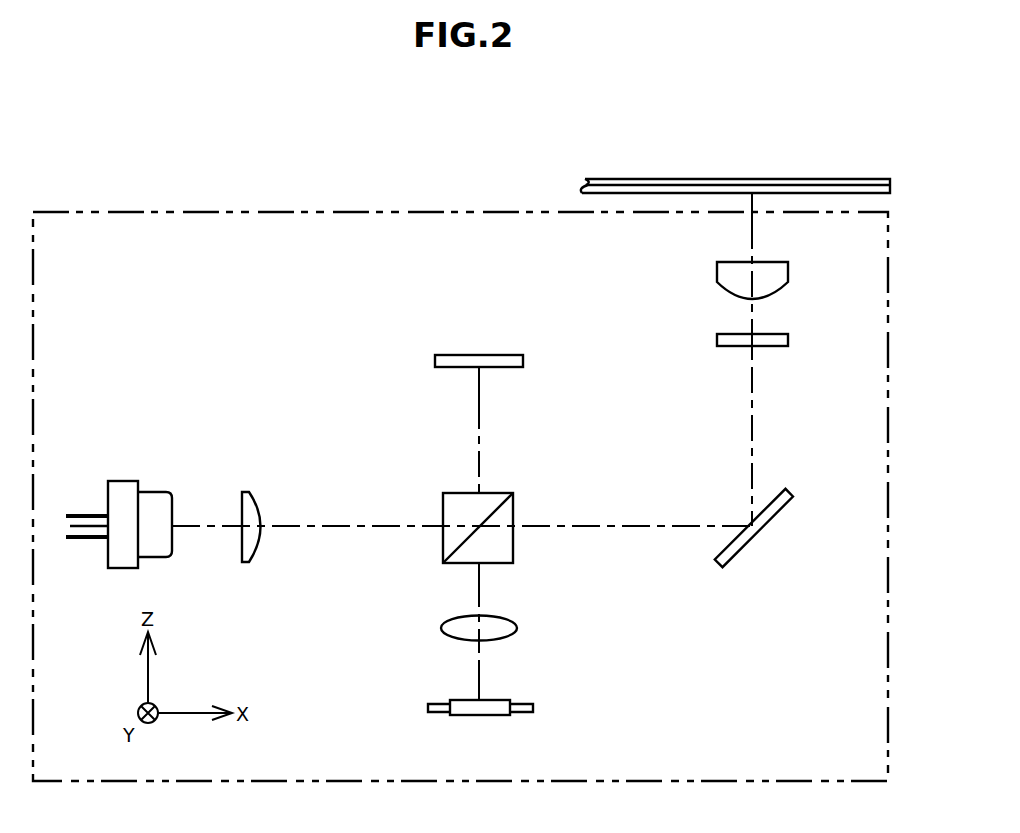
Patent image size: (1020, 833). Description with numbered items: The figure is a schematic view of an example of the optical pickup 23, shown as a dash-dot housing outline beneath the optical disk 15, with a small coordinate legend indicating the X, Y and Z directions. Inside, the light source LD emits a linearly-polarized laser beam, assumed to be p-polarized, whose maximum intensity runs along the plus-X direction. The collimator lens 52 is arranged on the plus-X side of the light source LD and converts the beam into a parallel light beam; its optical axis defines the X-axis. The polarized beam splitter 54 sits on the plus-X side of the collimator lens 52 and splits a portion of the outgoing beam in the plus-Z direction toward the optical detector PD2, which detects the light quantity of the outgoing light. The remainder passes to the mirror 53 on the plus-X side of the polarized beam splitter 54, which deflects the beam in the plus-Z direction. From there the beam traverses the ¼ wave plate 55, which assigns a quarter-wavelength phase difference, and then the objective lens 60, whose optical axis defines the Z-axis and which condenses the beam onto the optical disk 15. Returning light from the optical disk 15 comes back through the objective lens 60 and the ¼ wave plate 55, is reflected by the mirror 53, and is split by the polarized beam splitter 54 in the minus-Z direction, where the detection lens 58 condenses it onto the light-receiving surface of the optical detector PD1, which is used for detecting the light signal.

The optical pickup 23 is at (340, 212).
The optical disk 15 is at (695, 179).
The objective lens 60 is at (717, 268).
The ¼ wave plate 55 is at (783, 334).
The mirror 53 is at (748, 554).
The polarized beam splitter 54 is at (513, 510).
The collimator lens 52 is at (252, 492).
The detection lens 58 is at (452, 620).
The light source LD is at (160, 492).
The optical detector PD1 is at (456, 700).
The optical detector PD2 is at (456, 355).